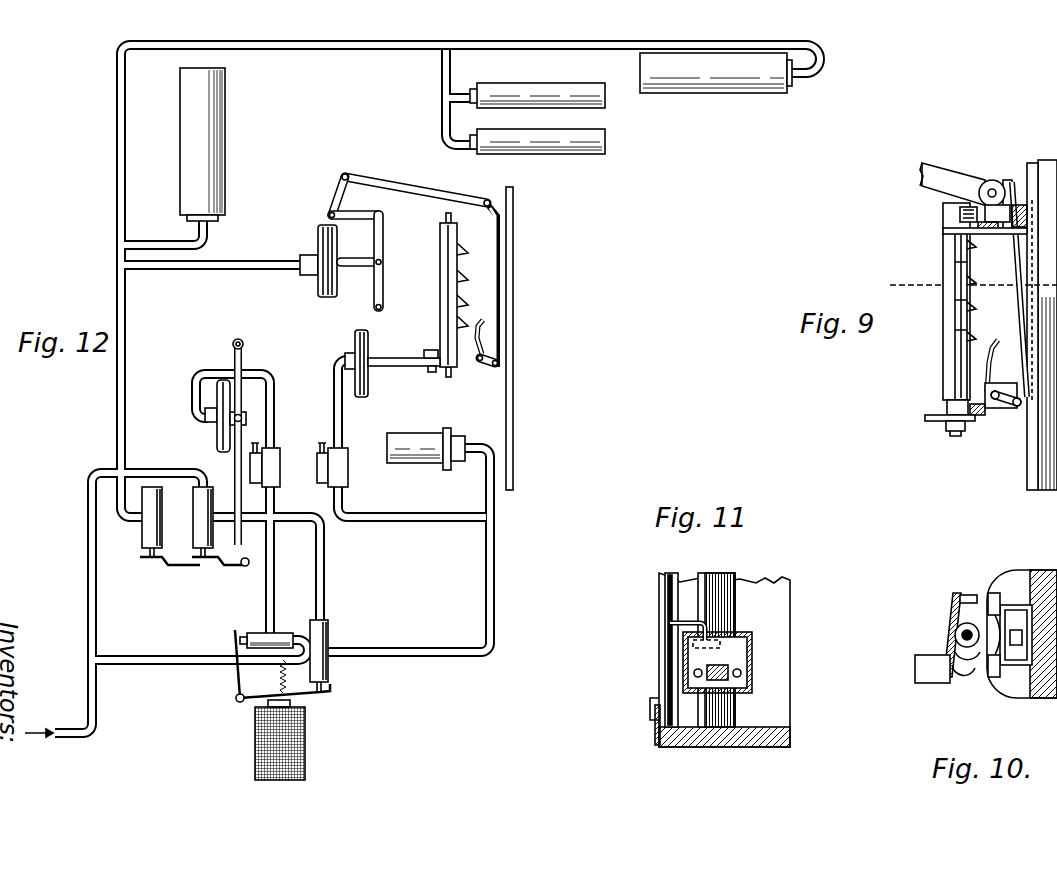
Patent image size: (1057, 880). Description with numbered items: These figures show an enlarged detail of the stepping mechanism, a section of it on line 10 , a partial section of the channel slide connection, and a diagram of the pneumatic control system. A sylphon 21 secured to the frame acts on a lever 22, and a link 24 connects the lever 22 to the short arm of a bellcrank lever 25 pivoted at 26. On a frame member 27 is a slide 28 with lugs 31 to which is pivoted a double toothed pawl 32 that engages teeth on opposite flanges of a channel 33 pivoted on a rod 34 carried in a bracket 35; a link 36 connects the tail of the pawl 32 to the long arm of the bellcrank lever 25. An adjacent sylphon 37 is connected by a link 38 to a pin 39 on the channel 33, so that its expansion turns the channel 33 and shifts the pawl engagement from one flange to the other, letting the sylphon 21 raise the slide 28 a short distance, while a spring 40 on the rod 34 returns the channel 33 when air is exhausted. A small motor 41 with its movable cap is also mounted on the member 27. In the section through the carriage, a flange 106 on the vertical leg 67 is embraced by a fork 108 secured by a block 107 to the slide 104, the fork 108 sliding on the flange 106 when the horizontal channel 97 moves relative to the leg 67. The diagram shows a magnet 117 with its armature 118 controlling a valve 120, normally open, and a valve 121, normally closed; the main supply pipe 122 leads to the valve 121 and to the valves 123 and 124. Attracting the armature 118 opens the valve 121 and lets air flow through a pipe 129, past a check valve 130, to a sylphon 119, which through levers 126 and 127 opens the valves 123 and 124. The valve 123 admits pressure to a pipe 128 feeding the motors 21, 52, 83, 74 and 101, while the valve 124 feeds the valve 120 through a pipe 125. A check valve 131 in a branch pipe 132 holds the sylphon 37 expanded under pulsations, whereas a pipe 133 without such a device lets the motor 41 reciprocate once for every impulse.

In FIG. 9, the section line 10 is at (928, 292).
In FIG. 12, the sylphon 21 is at (316, 290).
In FIG. 12, the lever 22 is at (384, 293).
In FIG. 12, the link 24 is at (377, 211).
In FIG. 12, the bellcrank lever 25 is at (432, 185).
In FIG. 12, the pivot 26 is at (340, 175).
In FIG. 9, the frame member 27 is at (1045, 163).
In FIG. 12, the slide 28 is at (514, 411).
In FIG. 9, the slide 28 is at (1027, 478).
In FIG. 12, the lugs 31 is at (491, 367).
In FIG. 9, the lugs 31 is at (1012, 408).
In FIG. 12, the double toothed pawl 32 is at (482, 318).
In FIG. 9, the double toothed pawl 32 is at (998, 340).
In FIG. 10, the double toothed pawl 32 is at (994, 677).
In FIG. 12, the channel 33 is at (439, 244).
In FIG. 9, the channel 33 is at (942, 352).
In FIG. 10, the channel 33 is at (962, 594).
In FIG. 9, the rod 34 is at (957, 278).
In FIG. 10, the rod 34 is at (954, 628).
In FIG. 9, the bracket 35 is at (995, 235).
In FIG. 12, the link 36 is at (500, 257).
In FIG. 9, the link 36 is at (1016, 296).
In FIG. 12, the sylphon 37 is at (370, 337).
In FIG. 12, the link 38 is at (394, 367).
In FIG. 9, the link 38 is at (931, 422).
In FIG. 10, the link 38 is at (915, 668).
In FIG. 12, the pin 39 is at (428, 351).
In FIG. 9, the pin 39 is at (958, 436).
In FIG. 10, the pin 39 is at (970, 672).
In FIG. 9, the spring 40 is at (986, 182).
In FIG. 12, the motor 41 is at (415, 432).
In FIG. 12, the motor 52 is at (540, 154).
In FIG. 11, the vertical leg 67 is at (664, 604).
In FIG. 12, the motor 74 is at (710, 94).
In FIG. 12, the motor 83 is at (543, 84).
In FIG. 11, the horizontal channel 97 is at (751, 660).
In FIG. 12, the motor 101 is at (226, 108).
In FIG. 11, the slide 104 is at (718, 680).
In FIG. 11, the flange 106 is at (672, 578).
In FIG. 11, the block 107 is at (720, 638).
In FIG. 11, the fork 108 is at (668, 630).
In FIG. 12, the magnet 117 is at (254, 741).
In FIG. 12, the armature 118 is at (312, 702).
In FIG. 12, the sylphon 119 is at (216, 437).
In FIG. 12, the valve 120 is at (330, 626).
In FIG. 12, the valve 121 is at (262, 632).
In FIG. 12, the main supply pipe 122 is at (97, 612).
In FIG. 12, the valve 123 is at (141, 538).
In FIG. 12, the valve 124 is at (197, 520).
In FIG. 12, the pipe 125 is at (325, 574).
In FIG. 12, the lever 126 is at (243, 352).
In FIG. 12, the lever 127 is at (246, 568).
In FIG. 12, the pipe 128 is at (126, 330).
In FIG. 12, the pipe 129 is at (275, 396).
In FIG. 12, the check valve 130 is at (281, 452).
In FIG. 12, the check valve 131 is at (349, 484).
In FIG. 12, the pipe 132 is at (343, 419).
In FIG. 12, the pipe 133 is at (495, 577).